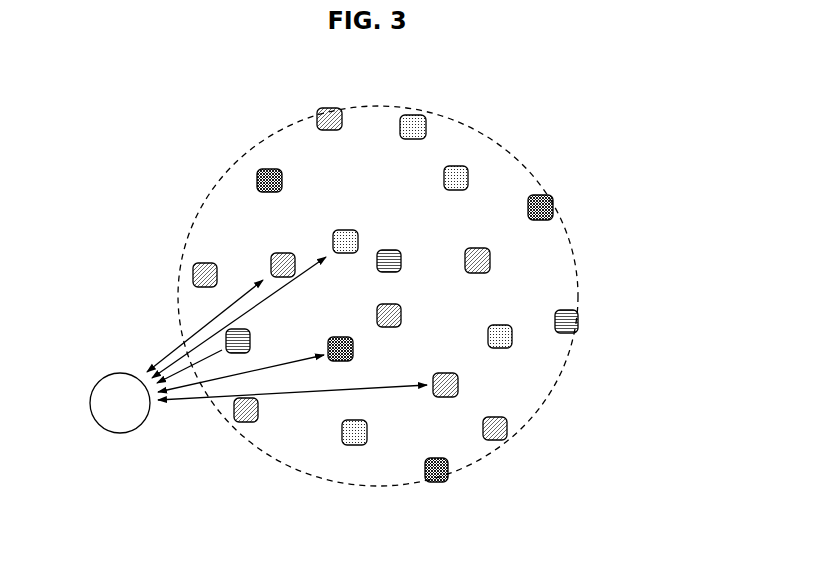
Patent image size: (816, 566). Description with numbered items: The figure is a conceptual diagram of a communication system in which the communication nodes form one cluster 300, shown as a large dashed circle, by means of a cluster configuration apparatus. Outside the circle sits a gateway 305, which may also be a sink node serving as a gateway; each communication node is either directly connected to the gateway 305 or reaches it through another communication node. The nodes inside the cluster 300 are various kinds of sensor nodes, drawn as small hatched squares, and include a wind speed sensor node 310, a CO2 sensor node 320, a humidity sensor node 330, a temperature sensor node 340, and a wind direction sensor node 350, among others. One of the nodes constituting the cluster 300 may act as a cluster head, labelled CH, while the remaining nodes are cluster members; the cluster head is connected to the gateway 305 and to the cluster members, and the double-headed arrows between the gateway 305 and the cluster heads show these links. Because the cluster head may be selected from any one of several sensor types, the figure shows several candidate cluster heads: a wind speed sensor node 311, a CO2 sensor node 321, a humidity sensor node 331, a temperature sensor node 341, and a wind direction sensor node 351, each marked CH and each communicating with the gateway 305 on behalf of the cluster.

The cluster 300 is at (385, 487).
The gateway 305 is at (120, 433).
The wind speed sensor node 310 is at (563, 308).
The wind speed sensor node (cluster head) 311 is at (250, 341).
The CO2 sensor node 320 is at (540, 193).
The CO2 sensor node (cluster head) 321 is at (353, 347).
The humidity sensor node 330 is at (408, 113).
The humidity sensor node (cluster head) 331 is at (345, 228).
The temperature sensor node 340 is at (332, 106).
The temperature sensor node (cluster head) 341 is at (283, 251).
The wind direction sensor node 350 is at (205, 261).
The wind direction sensor node (cluster head) 351 is at (445, 371).